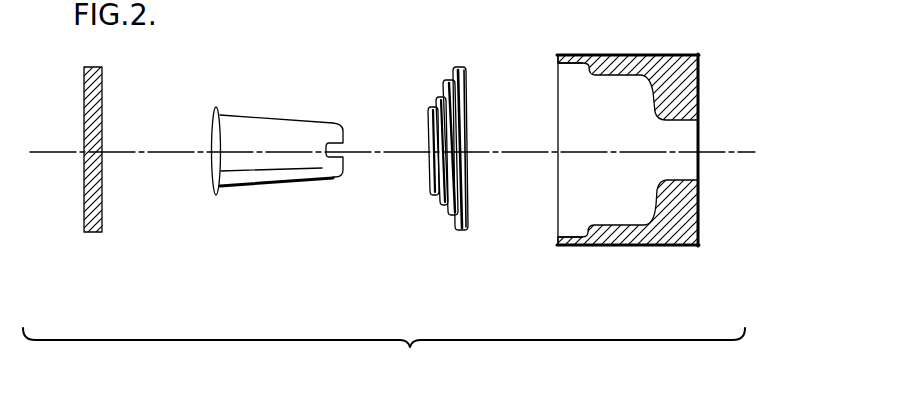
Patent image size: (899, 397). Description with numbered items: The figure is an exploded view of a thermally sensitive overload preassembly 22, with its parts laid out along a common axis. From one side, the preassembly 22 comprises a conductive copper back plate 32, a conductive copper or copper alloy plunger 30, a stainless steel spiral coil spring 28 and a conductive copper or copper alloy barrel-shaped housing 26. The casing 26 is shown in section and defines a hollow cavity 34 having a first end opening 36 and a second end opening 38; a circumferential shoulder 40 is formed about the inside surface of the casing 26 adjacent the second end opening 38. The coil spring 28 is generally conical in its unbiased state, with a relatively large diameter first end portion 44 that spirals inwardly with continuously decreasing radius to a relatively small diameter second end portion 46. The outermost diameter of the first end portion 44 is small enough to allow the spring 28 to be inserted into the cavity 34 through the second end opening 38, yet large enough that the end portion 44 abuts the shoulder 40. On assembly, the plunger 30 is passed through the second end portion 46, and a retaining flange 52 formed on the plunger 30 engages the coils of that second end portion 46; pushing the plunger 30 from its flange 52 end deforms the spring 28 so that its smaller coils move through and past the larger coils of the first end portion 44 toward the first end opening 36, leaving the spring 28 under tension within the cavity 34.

The overload preassembly 22 is at (383, 257).
The barrel-shaped housing 26 is at (634, 178).
The spiral coil spring 28 is at (441, 160).
The plunger 30 is at (300, 178).
The back plate 32 is at (94, 233).
The hollow cavity 34 is at (632, 128).
The first end opening 36 is at (699, 133).
The second end opening 38 is at (559, 182).
The circumferential shoulder 40 is at (589, 66).
The first end portion 44 is at (459, 66).
The second end portion 46 is at (429, 188).
The retaining flange 52 is at (216, 196).